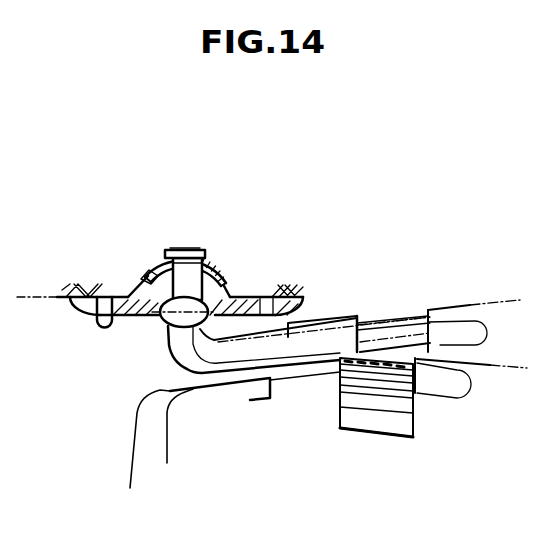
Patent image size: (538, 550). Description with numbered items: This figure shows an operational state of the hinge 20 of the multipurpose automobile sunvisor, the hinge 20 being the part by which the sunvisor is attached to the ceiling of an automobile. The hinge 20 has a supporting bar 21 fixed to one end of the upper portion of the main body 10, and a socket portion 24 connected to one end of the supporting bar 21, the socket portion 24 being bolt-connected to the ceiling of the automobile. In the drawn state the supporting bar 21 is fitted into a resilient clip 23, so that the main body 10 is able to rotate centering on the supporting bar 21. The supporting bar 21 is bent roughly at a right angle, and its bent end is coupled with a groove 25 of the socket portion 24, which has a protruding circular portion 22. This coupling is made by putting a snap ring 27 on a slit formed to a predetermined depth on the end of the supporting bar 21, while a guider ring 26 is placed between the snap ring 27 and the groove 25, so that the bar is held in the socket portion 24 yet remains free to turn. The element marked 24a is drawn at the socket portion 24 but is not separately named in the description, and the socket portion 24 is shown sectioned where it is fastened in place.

The main body 10 is at (128, 425).
The hinge 20 is at (157, 323).
The supporting bar 21 is at (310, 367).
The protruding circular portion 22 is at (223, 285).
The resilient clip 23 is at (403, 367).
The socket portion 24 is at (80, 310).
The rivet 24a is at (100, 293).
The groove 25 is at (144, 283).
The guider ring 26 is at (160, 256).
The snap ring 27 is at (168, 250).